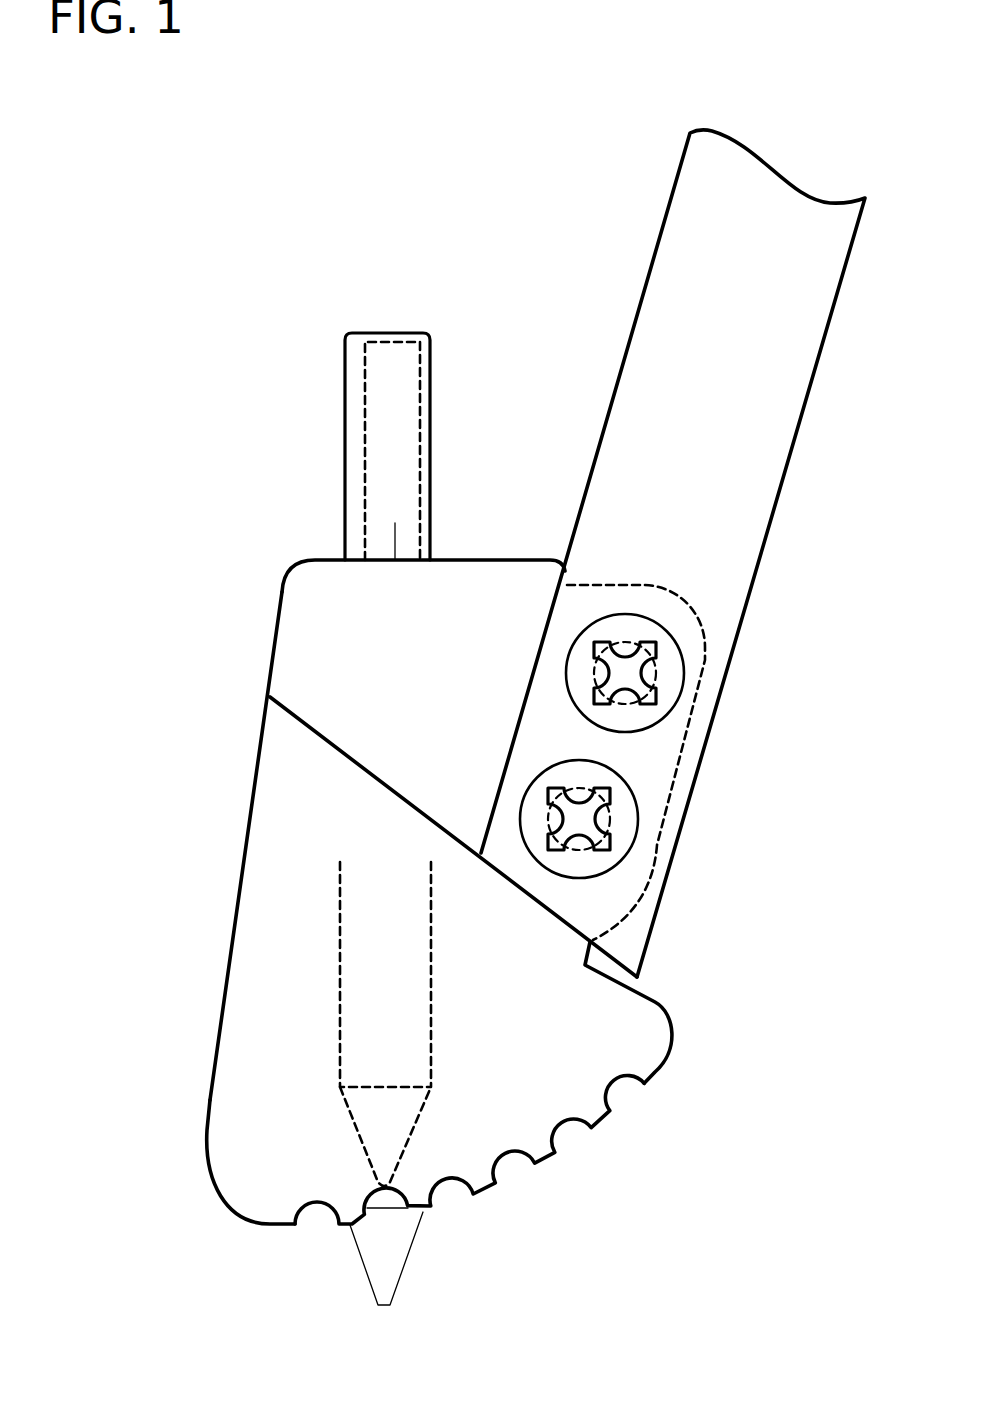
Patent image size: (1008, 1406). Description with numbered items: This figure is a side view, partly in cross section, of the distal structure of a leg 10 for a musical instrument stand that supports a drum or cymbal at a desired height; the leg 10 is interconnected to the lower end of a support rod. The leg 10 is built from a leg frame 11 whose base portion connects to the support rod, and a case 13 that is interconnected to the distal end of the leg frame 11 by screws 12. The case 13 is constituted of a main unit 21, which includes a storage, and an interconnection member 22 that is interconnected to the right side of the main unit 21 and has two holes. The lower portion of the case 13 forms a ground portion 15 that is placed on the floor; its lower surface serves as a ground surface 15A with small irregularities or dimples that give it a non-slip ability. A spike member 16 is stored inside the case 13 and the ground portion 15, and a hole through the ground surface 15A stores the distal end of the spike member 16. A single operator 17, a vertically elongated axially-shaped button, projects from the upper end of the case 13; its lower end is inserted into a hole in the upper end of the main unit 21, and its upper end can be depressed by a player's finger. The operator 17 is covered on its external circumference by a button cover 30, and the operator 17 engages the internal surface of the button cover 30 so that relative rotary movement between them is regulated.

The leg 10 is at (287, 212).
The leg frame 11 is at (652, 277).
The screws 12 is at (672, 685).
The case 13 is at (290, 568).
The ground portion 15 is at (218, 1148).
The ground surface 15A is at (423, 1210).
The spike member 16 is at (340, 1033).
The operator 17 is at (365, 407).
The main unit 21 is at (278, 660).
The interconnection member 22 is at (673, 788).
The button cover 30 is at (428, 342).